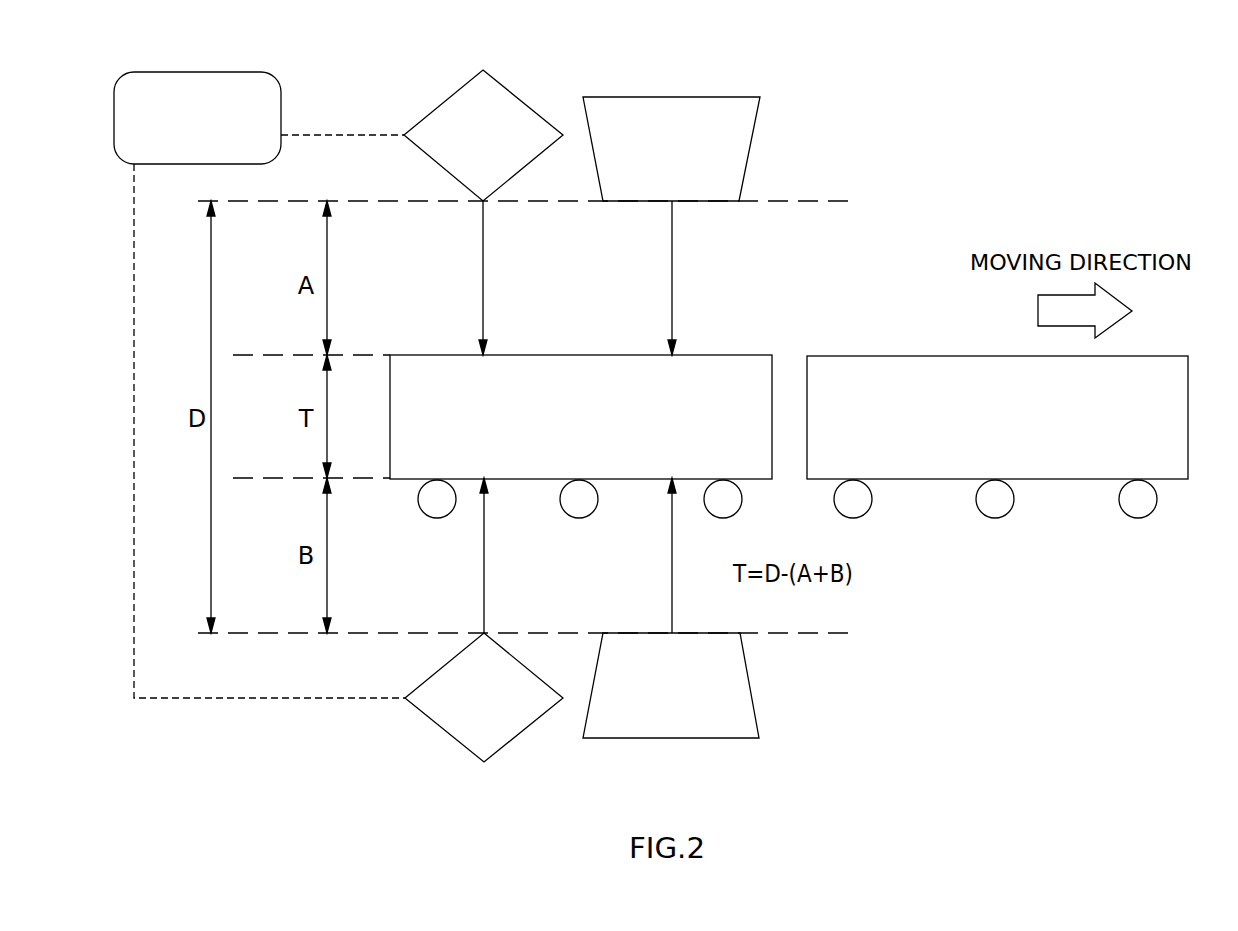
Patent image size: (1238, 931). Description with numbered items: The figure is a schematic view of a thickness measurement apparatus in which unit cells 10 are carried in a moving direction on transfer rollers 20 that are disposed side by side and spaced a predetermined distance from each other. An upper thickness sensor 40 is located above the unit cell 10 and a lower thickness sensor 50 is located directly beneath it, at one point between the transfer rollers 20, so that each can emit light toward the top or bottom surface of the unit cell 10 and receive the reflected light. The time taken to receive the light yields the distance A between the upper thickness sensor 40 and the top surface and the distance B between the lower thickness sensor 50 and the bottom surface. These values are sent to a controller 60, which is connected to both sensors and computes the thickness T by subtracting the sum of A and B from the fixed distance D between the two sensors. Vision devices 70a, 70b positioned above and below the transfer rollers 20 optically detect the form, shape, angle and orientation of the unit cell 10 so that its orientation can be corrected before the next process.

The unit cell 10 is at (819, 365).
The transfer rollers 20 is at (995, 510).
The upper thickness sensor 40 is at (482, 70).
The lower thickness sensor 50 is at (484, 762).
The controller 60 is at (196, 72).
The vision device 70a is at (670, 97).
The vision device 70b is at (672, 738).